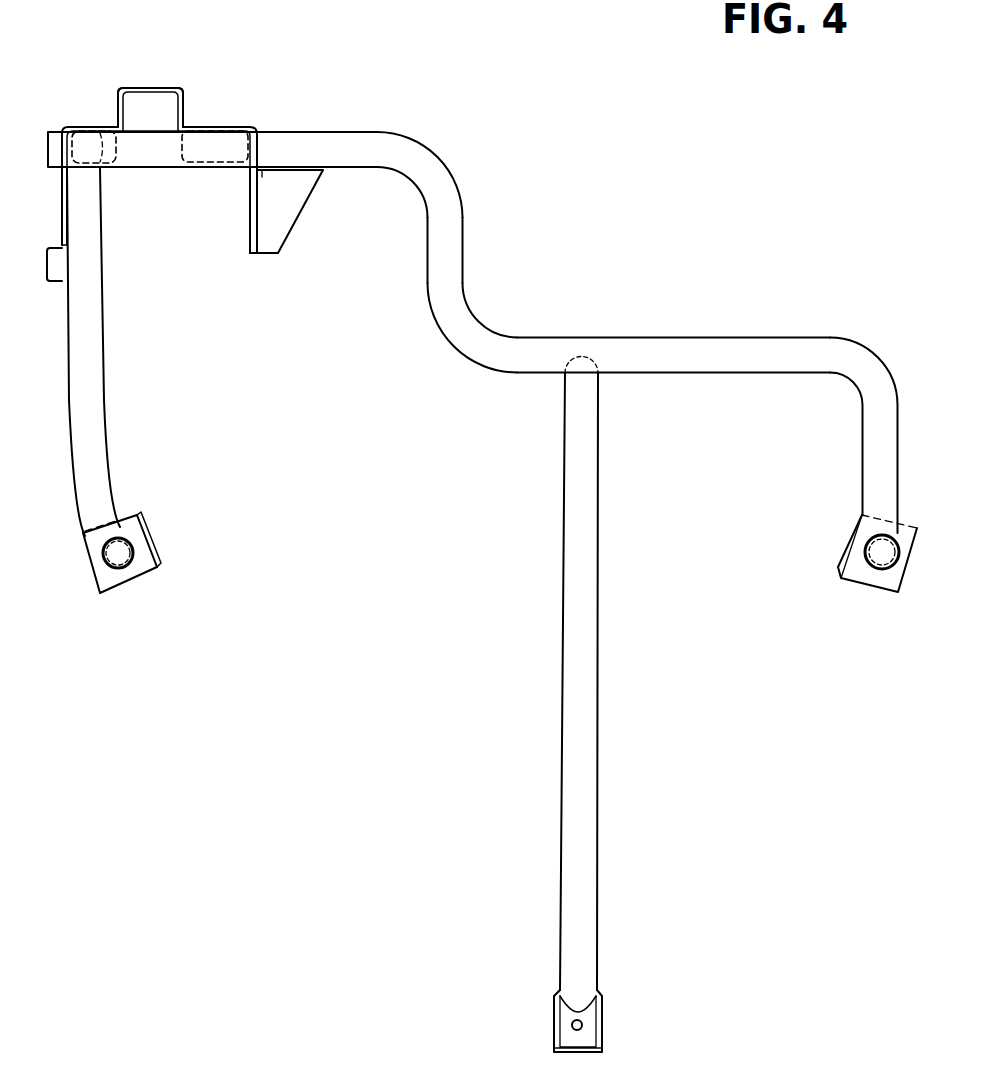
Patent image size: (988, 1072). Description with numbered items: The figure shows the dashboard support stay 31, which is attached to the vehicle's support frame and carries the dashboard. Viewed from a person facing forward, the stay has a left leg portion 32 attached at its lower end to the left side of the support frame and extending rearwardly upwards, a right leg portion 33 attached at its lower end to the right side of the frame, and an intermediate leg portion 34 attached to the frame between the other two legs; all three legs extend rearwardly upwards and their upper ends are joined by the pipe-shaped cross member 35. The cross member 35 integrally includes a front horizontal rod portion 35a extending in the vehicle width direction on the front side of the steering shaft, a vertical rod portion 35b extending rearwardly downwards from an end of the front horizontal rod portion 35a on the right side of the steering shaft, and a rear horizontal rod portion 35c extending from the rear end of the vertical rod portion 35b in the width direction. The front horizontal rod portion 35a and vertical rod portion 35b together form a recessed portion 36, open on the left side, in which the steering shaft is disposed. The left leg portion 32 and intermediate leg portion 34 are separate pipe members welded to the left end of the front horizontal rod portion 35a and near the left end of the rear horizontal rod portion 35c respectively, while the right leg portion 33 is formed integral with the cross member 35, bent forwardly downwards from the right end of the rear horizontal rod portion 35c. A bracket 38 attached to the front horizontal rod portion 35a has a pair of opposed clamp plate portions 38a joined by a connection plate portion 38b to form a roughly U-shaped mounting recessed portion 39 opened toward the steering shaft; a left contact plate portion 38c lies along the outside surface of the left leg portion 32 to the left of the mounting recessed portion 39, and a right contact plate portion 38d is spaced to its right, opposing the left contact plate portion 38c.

The dashboard support stay 31 is at (785, 329).
The left leg portion 32 is at (92, 410).
The right leg portion 33 is at (877, 446).
The intermediate leg portion 34 is at (580, 624).
The cross member 35 is at (668, 50).
The front horizontal rod portion 35a is at (348, 136).
The vertical rod portion 35b is at (452, 230).
The rear horizontal rod portion 35c is at (688, 354).
The recessed portion 36 is at (377, 246).
The bracket 38 is at (230, 123).
The clamp plate portions 38a is at (184, 108).
The connection plate portion 38b is at (148, 86).
The left contact plate portion 38c is at (68, 201).
The right contact plate portion 38d is at (250, 221).
The mounting recessed portion 39 is at (177, 94).